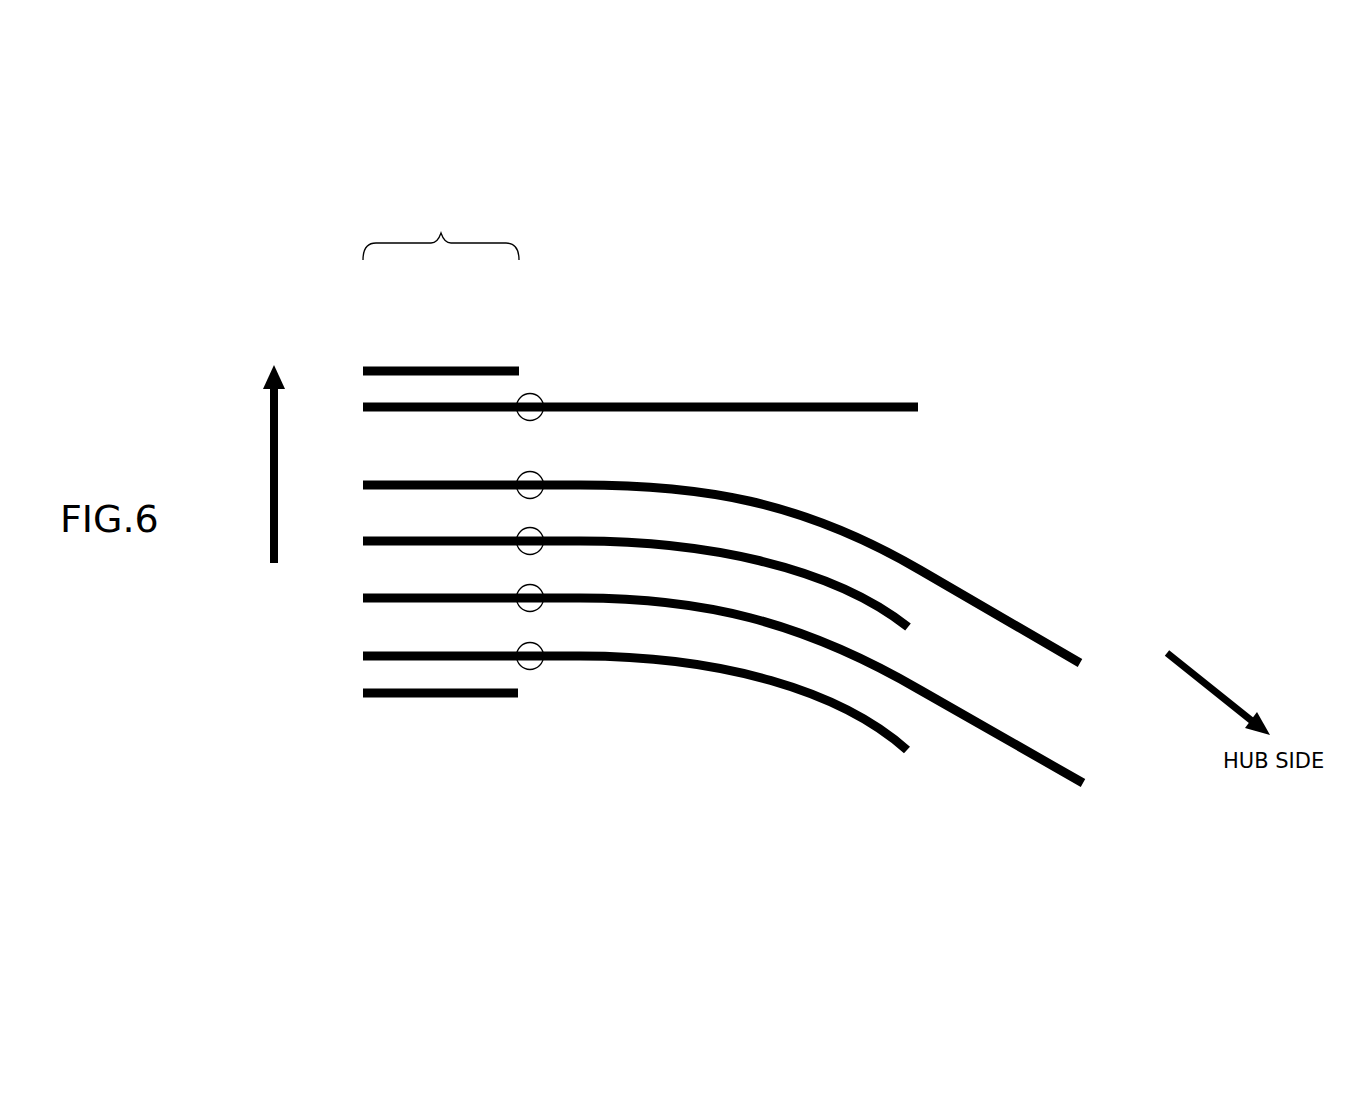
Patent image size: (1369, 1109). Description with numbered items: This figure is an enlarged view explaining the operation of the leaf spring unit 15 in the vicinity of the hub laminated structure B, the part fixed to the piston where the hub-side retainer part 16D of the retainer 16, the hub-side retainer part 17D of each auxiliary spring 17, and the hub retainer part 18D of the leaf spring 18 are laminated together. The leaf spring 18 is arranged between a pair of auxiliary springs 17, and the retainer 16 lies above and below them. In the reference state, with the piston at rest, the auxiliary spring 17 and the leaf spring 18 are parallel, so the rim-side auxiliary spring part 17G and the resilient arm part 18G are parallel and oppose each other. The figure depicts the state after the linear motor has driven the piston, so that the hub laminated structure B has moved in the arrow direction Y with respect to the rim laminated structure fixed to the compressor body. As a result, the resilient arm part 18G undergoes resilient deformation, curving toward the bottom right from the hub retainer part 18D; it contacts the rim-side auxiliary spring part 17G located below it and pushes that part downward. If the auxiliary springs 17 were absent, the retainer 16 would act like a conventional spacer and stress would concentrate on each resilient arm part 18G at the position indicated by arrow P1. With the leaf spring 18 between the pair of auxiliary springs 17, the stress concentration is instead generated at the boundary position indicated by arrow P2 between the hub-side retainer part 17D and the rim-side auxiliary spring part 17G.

The leaf spring unit 15 is at (851, 216).
The retainer 16 is at (441, 532).
The hub-side retainer part 16D is at (415, 367).
The auxiliary spring 17 is at (656, 588).
The hub-side retainer part 17D is at (383, 402).
The rim-side auxiliary spring part 17G is at (725, 560).
The leaf spring 18 is at (702, 656).
The hub retainer part 18D is at (383, 481).
The resilient arm part 18G is at (540, 474).
The position indicated by arrow P1 is at (510, 465).
The boundary position indicated by arrow P2 is at (532, 382).
The hub laminated structure B is at (441, 233).
The arrow direction Y is at (266, 464).